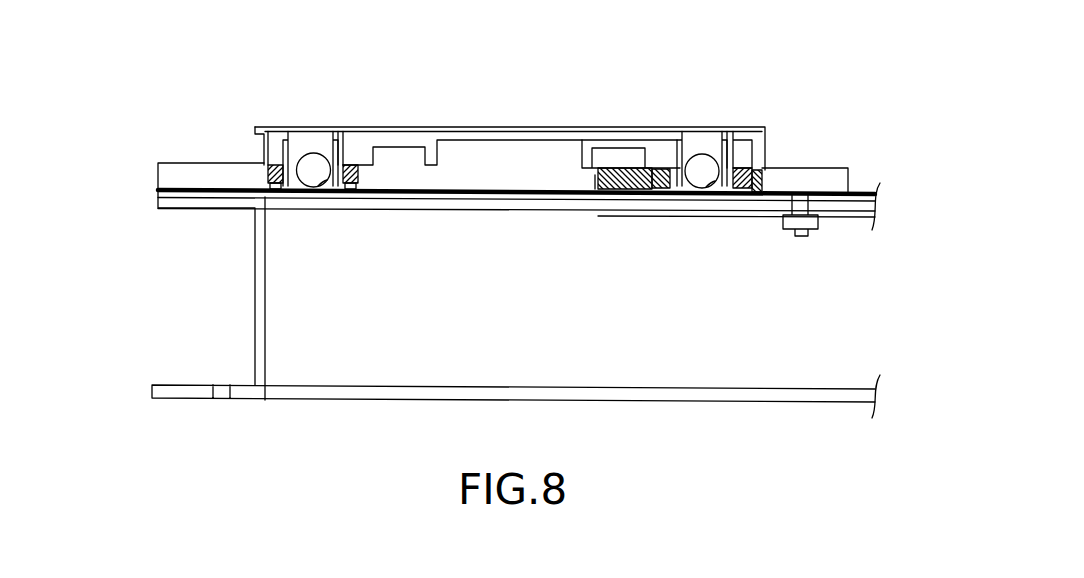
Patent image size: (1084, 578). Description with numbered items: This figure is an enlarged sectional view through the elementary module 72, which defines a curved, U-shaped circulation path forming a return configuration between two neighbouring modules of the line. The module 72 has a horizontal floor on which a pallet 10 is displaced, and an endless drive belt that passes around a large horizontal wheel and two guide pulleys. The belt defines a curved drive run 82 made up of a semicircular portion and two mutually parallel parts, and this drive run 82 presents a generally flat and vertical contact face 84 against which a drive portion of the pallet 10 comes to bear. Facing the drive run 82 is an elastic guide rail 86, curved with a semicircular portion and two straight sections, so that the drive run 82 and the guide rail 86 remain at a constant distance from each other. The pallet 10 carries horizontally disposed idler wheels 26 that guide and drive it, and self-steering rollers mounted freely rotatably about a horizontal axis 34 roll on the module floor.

The pallet 10 is at (465, 125).
The idler wheels 26 is at (362, 192).
The horizontal axis 34 is at (308, 192).
The elementary module 72 is at (145, 178).
The curved drive run 82 is at (773, 175).
The contact face 84 is at (750, 195).
The elastic guide rail 86 is at (607, 195).